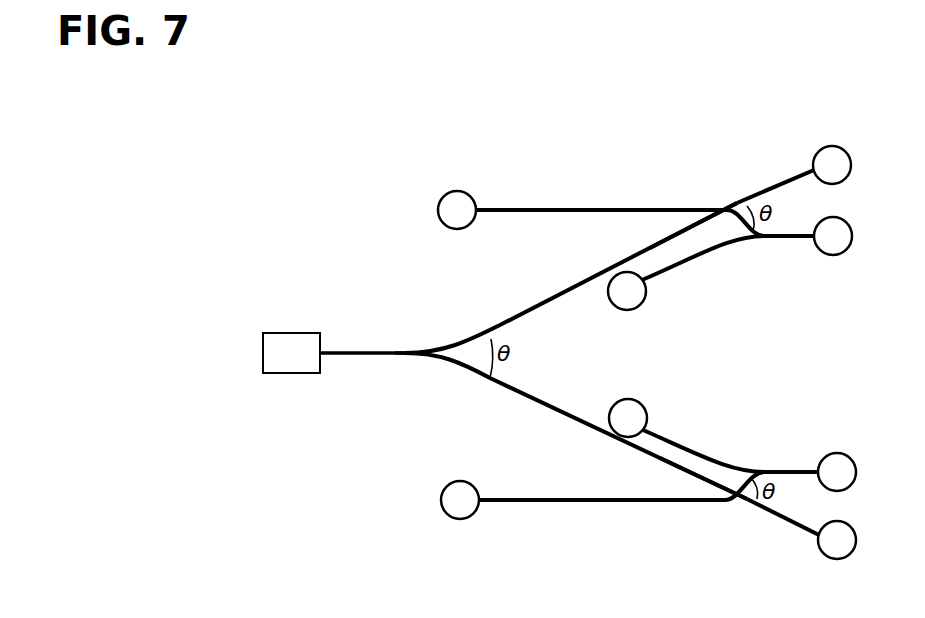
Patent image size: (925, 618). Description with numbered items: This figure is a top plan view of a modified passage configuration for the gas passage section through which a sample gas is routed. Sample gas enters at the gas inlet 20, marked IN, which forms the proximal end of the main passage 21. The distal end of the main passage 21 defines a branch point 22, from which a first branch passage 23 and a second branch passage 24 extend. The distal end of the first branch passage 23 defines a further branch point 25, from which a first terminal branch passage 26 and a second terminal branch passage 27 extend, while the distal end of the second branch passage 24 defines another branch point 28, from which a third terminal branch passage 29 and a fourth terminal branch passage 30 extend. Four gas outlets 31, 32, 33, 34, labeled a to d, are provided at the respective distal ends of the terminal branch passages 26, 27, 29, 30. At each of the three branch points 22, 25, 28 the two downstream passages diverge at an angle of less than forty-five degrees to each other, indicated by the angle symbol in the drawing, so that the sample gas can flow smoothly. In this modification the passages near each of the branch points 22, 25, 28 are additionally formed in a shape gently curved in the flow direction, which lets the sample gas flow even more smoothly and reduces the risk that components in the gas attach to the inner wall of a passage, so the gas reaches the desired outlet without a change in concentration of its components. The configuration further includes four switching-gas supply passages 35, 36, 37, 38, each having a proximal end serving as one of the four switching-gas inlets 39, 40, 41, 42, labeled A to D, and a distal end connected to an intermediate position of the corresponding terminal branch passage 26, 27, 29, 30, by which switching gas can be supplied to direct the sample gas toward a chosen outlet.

The gas inlet 20 is at (263, 347).
The main passage 21 is at (351, 350).
The branch point 22 is at (403, 351).
The first branch passage 23 is at (529, 311).
The second branch passage 24 is at (523, 398).
The branch point 25 is at (661, 244).
The first terminal branch passage 26 is at (777, 187).
The second terminal branch passage 27 is at (785, 239).
The branch point 28 is at (667, 467).
The third terminal branch passage 29 is at (786, 470).
The fourth terminal branch passage 30 is at (787, 522).
The gas outlet 31 is at (846, 179).
The gas outlet 32 is at (847, 250).
The gas outlet 33 is at (851, 486).
The gas outlet 34 is at (851, 554).
The switching-gas supply passage 35 is at (580, 208).
The switching-gas supply passage 36 is at (712, 258).
The switching-gas supply passage 37 is at (701, 452).
The switching-gas supply passage 38 is at (590, 502).
The switching-gas inlet 39 is at (444, 196).
The switching-gas inlet 40 is at (614, 304).
The switching-gas inlet 41 is at (615, 405).
The switching-gas inlet 42 is at (447, 487).